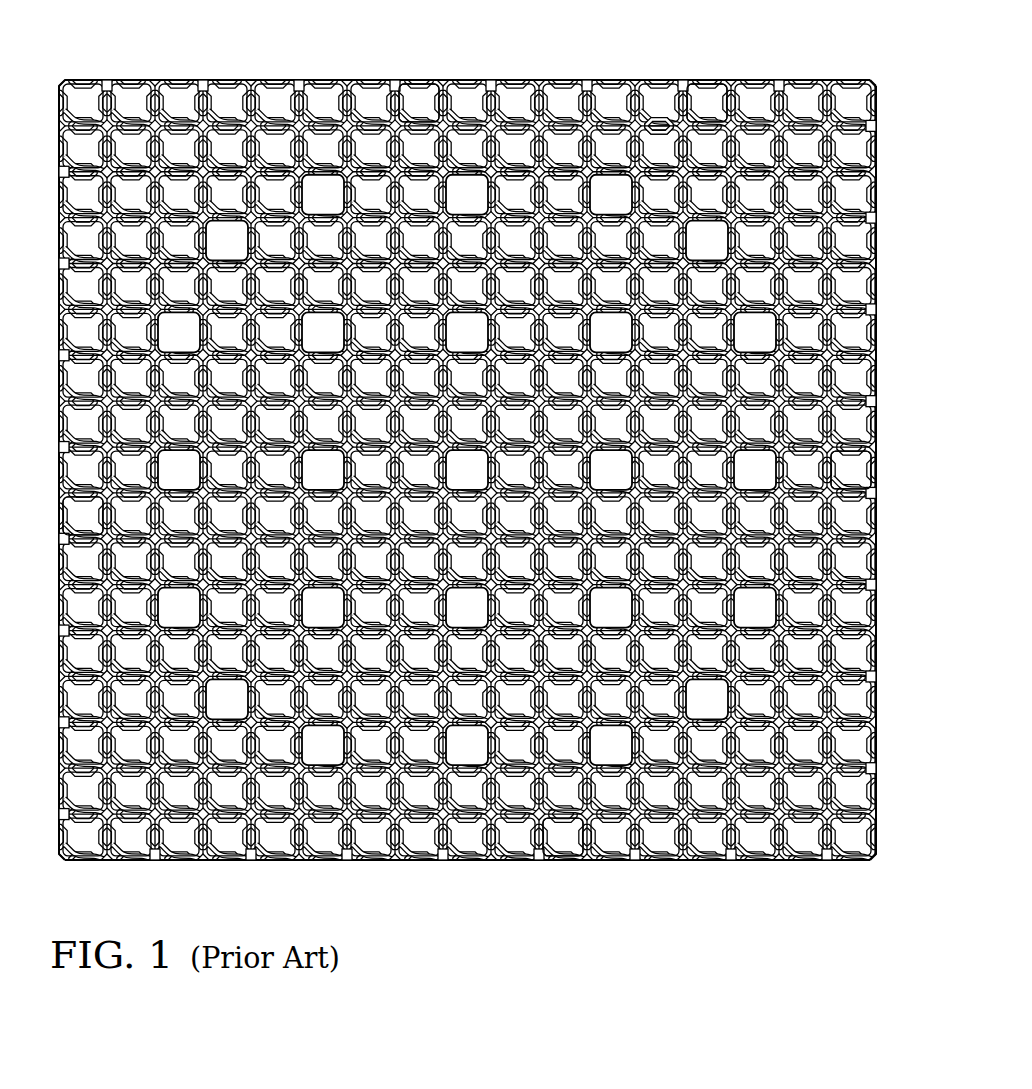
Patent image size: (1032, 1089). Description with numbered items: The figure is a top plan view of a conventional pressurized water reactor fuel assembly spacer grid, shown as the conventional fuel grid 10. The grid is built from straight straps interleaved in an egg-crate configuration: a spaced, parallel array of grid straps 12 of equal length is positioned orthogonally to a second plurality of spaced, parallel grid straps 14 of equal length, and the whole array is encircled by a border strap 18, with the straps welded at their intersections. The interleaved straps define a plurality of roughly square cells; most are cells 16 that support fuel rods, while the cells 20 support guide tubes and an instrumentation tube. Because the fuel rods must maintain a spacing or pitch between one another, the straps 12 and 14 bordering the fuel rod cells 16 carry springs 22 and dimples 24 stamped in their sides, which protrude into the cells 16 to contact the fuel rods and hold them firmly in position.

The conventional fuel grid 10 is at (493, 31).
The grid straps 12 is at (688, 107).
The grid straps 14 is at (658, 123).
The cells 16 is at (416, 101).
The border strap 18 is at (877, 612).
The cells 20 is at (313, 203).
The springs 22 is at (385, 840).
The dimples 24 is at (281, 861).